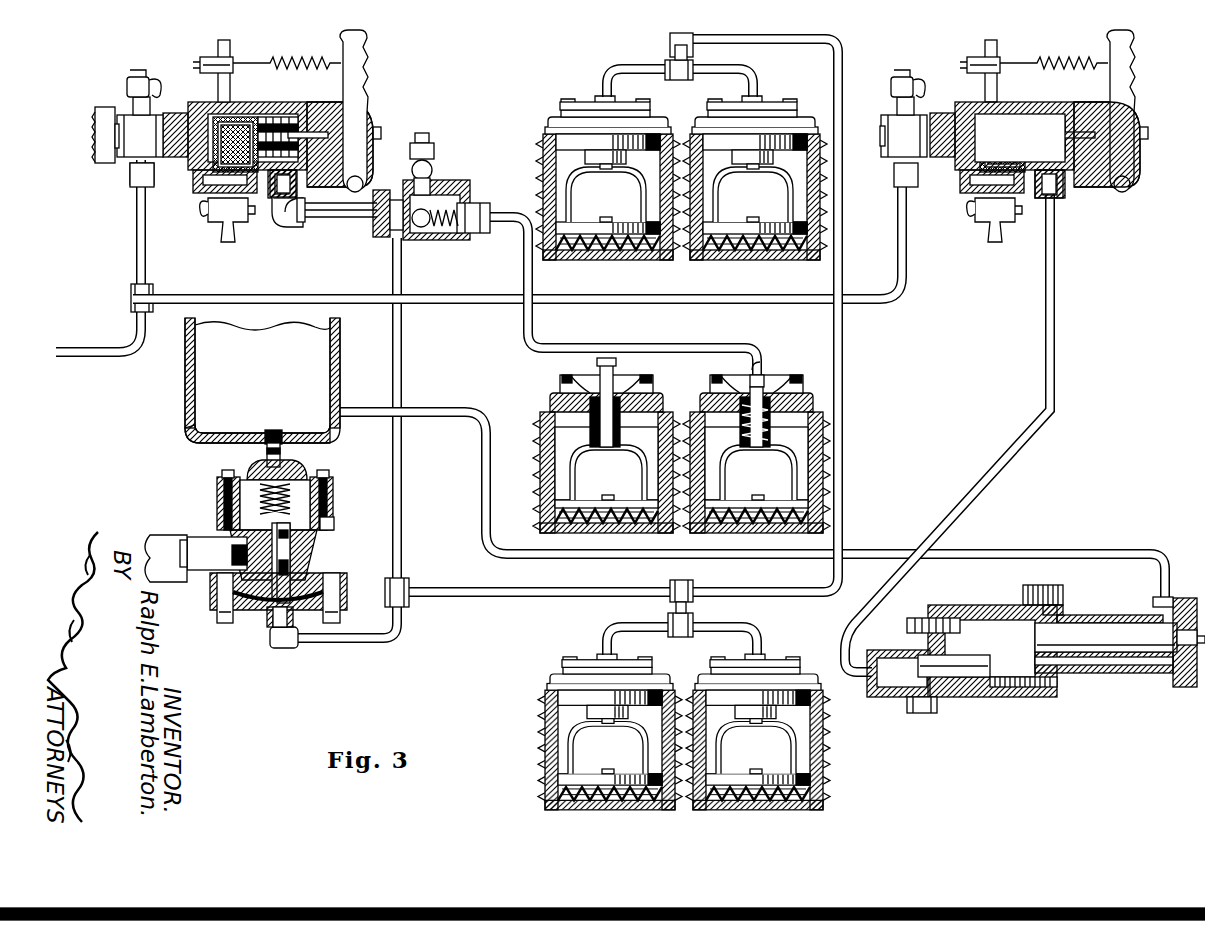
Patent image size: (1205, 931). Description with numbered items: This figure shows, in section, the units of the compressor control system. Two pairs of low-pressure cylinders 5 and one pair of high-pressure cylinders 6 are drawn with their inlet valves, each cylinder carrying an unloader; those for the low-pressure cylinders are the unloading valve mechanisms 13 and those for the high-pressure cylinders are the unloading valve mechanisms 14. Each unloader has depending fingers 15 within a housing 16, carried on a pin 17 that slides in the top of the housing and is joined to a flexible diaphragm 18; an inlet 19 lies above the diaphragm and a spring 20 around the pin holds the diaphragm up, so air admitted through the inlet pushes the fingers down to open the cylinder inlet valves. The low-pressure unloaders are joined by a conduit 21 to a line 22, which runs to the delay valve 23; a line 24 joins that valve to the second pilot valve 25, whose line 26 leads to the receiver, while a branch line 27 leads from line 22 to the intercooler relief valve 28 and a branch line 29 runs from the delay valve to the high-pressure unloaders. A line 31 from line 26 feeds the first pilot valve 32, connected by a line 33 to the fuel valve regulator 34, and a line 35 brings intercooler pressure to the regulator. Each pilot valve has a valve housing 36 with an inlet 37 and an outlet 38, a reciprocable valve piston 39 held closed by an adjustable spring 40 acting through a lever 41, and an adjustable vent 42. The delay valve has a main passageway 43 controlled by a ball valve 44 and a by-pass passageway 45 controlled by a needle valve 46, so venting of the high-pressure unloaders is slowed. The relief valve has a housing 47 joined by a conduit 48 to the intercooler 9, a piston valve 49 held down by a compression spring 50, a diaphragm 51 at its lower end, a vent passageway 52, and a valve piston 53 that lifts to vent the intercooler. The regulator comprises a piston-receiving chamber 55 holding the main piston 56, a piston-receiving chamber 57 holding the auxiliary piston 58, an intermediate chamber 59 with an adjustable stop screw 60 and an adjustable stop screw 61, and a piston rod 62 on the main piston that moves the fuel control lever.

The low-pressure cylinders 5 is at (541, 157).
The high-pressure cylinders 6 is at (541, 467).
The intercooler 9 is at (185, 385).
The unloading valve mechanisms 13 is at (604, 94).
The unloading valve mechanisms 14 is at (597, 372).
The fingers 15 is at (643, 198).
The housing 16 is at (823, 492).
The pin 17 is at (770, 437).
The diaphragm 18 is at (775, 385).
The inlet 19 is at (750, 368).
The spring 20 is at (742, 437).
The conduit 21 is at (843, 262).
The line 22 is at (400, 360).
The delay valve 23 is at (431, 200).
The line 24 is at (355, 217).
The pilot valve 25 is at (310, 110).
The line 26 is at (116, 350).
The branch line 27 is at (372, 650).
The intercooler relief valve 28 is at (345, 578).
The branch line 29 is at (524, 272).
The line 31 is at (621, 297).
The pilot valve 32 is at (1078, 110).
The line 33 is at (1056, 296).
The fuel valve regulator 34 is at (1062, 605).
The line 35 is at (446, 408).
The valve housing 36 is at (252, 110).
The inlet 37 is at (178, 112).
The outlet 38 is at (281, 192).
The valve piston 39 is at (290, 120).
The adjustable spring 40 is at (312, 46).
The lever 41 is at (358, 108).
The adjustable vent 42 is at (352, 185).
The main passageway 43 is at (452, 235).
The ball valve 44 is at (420, 233).
The by-pass passageway 45 is at (399, 182).
The needle valve 46 is at (432, 200).
The housing 47 is at (255, 543).
The conduit 48 is at (282, 453).
The piston valve 49 is at (310, 560).
The compression spring 50 is at (258, 475).
The diaphragm 51 is at (263, 626).
The vent passageway 52 is at (235, 545).
The valve piston 53 is at (333, 515).
The piston-receiving chamber 55 is at (1036, 645).
The main piston 56 is at (1122, 628).
The piston-receiving chamber 57 is at (893, 650).
The auxiliary piston 58 is at (968, 660).
The intermediate chamber 59 is at (1000, 615).
The adjustable stop screw 60 is at (1010, 690).
The adjustable stop screw 61 is at (962, 612).
The piston rod 62 is at (1195, 594).